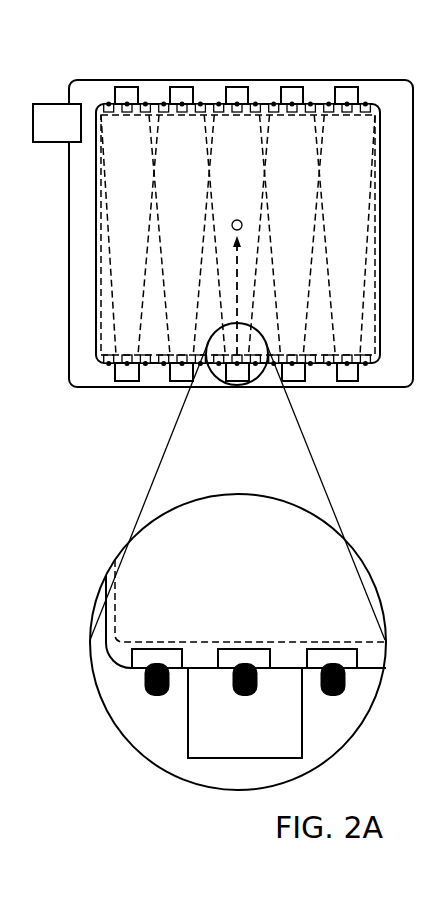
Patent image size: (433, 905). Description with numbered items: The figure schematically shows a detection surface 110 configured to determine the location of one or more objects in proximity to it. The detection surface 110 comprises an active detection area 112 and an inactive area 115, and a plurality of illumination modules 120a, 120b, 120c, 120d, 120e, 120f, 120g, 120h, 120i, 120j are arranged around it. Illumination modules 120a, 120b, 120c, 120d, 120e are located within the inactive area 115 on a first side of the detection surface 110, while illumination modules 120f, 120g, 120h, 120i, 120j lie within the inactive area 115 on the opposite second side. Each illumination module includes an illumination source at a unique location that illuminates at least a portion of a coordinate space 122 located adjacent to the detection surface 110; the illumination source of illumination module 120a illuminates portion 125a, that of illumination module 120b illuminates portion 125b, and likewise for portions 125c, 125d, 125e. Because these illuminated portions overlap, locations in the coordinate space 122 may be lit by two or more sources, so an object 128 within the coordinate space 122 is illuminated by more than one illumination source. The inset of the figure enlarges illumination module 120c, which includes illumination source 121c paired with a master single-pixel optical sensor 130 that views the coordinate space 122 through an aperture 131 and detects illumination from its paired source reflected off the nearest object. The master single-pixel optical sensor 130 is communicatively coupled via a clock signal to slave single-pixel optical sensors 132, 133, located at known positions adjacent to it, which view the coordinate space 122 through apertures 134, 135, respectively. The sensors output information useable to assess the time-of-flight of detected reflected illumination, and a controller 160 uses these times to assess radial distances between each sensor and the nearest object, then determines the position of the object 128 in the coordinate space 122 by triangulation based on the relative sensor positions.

The detection surface 110 is at (82, 74).
The active detection area 112 is at (413, 192).
The inactive area 115 is at (407, 101).
The controller 160 is at (70, 133).
The coordinate space 122 is at (368, 138).
The portion 125a is at (135, 235).
The portion 125b is at (193, 235).
The portion 125c is at (250, 235).
The portion 125d is at (304, 235).
The portion 125e is at (351, 235).
The object 128 is at (237, 219).
The illumination module 120a is at (127, 391).
The illumination module 120b is at (182, 391).
The illumination module 120c is at (238, 391).
The illumination module 120d is at (294, 391).
The illumination module 120e is at (348, 391).
The illumination module 120f is at (126, 79).
The illumination module 120g is at (182, 79).
The illumination module 120h is at (237, 79).
The illumination module 120i is at (292, 79).
The illumination module 120j is at (346, 79).
The illumination source 121c is at (290, 753).
The master single-pixel optical sensor 130 is at (250, 698).
The aperture 131 is at (250, 648).
The slave single-pixel optical sensor 132 is at (162, 698).
The slave single-pixel optical sensor 133 is at (340, 698).
The aperture 134 is at (163, 648).
The aperture 135 is at (345, 648).